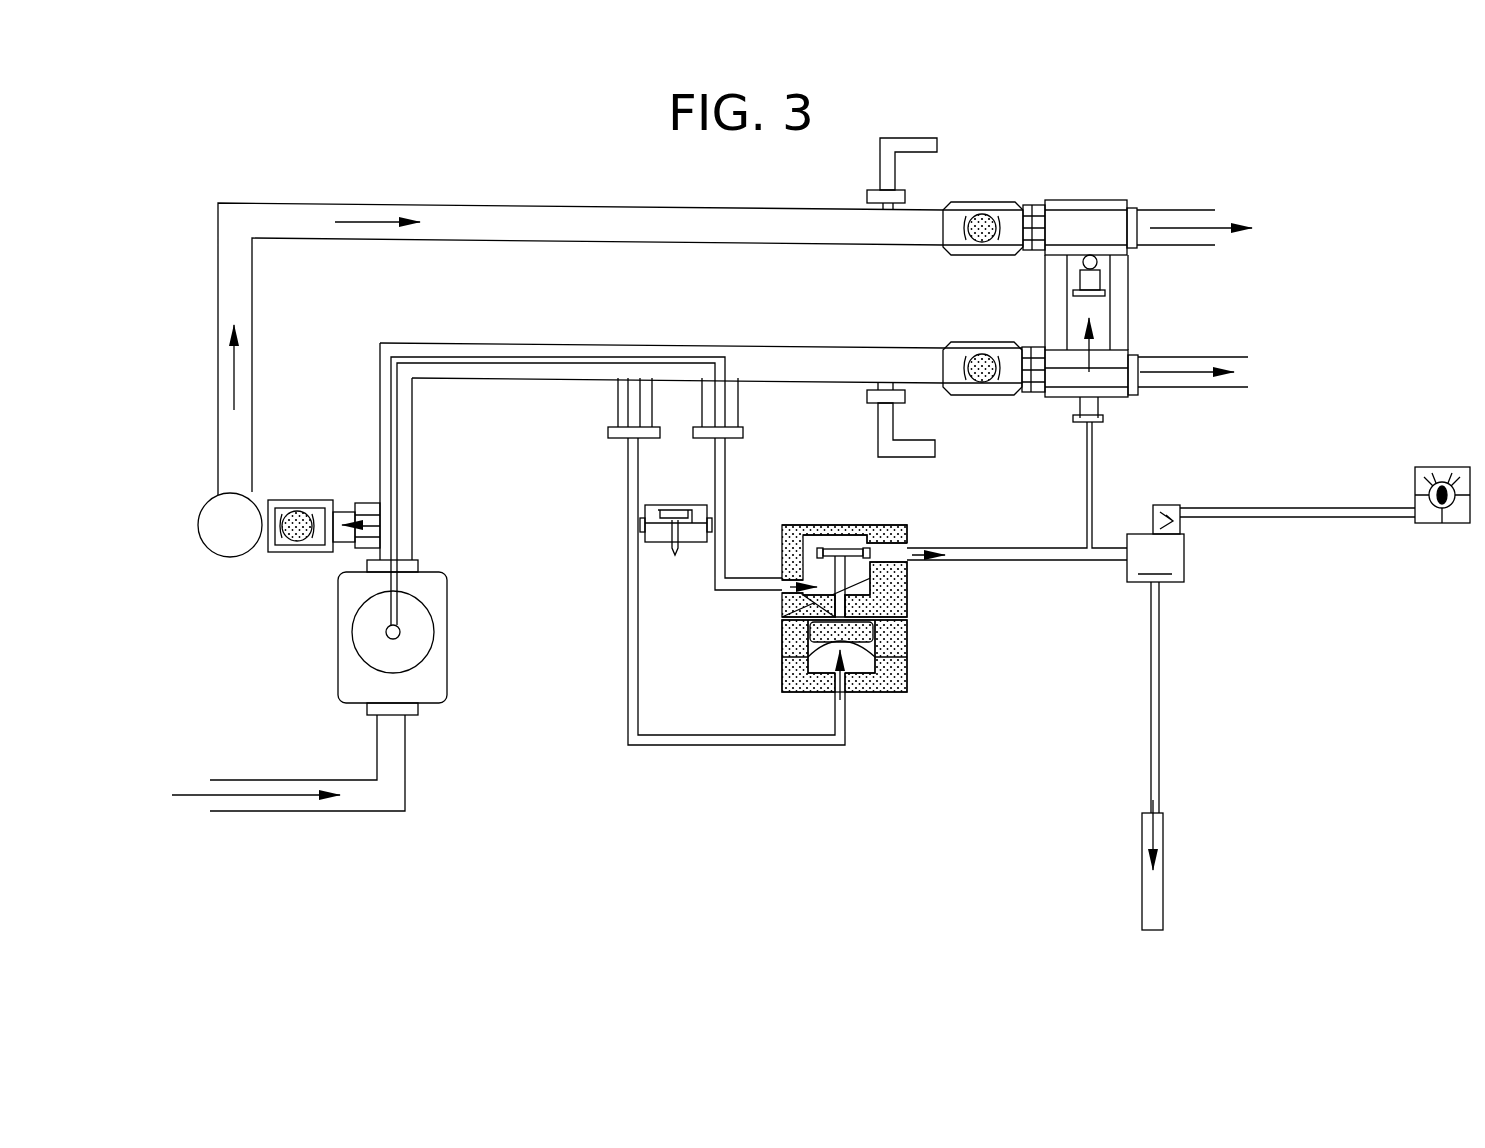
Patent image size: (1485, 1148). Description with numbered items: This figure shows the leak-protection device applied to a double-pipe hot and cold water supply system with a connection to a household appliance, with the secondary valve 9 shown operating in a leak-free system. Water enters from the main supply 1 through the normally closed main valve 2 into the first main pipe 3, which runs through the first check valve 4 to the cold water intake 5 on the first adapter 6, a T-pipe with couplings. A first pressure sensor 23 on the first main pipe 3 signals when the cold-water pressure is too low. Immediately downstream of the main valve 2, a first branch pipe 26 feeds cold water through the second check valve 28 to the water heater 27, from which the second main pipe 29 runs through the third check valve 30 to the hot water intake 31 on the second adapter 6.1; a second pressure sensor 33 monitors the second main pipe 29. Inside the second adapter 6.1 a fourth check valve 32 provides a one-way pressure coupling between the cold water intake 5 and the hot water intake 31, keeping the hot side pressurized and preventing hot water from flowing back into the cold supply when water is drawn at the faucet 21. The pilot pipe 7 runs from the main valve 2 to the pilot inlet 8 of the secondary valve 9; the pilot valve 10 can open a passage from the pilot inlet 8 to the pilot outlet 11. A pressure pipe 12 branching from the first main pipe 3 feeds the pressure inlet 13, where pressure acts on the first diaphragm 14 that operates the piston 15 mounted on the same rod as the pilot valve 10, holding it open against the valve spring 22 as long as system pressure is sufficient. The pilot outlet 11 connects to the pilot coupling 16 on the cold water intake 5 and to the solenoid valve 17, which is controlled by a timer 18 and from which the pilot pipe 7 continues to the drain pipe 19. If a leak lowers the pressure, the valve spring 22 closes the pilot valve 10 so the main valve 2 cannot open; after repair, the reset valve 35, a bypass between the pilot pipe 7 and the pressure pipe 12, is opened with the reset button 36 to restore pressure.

The main supply 1 is at (381, 815).
The main valve 2 is at (340, 636).
The first main pipe 3 is at (413, 515).
The first check valve 4 is at (975, 342).
The cold water intake 5 is at (1036, 398).
The first adapter 6 is at (1098, 200).
The second adapter 6.1 is at (1144, 298).
The pilot pipe 7 is at (530, 343).
The pilot inlet 8 is at (857, 594).
The secondary valve 9 is at (838, 532).
The pilot valve 10 is at (860, 560).
The pilot outlet 11 is at (915, 540).
The pressure pipe 12 is at (627, 710).
The pressure inlet 13 is at (848, 695).
The first diaphragm 14 is at (866, 660).
The piston 15 is at (860, 635).
The pilot coupling 16 is at (1103, 415).
The solenoid valve 17 is at (1185, 553).
The timer 18 is at (1410, 490).
The drain pipe 19 is at (1164, 828).
The faucet 21 is at (1238, 392).
The valve spring 22 is at (822, 548).
The first pressure sensor 23 is at (868, 397).
The first branch pipe 26 is at (366, 503).
The water heater 27 is at (214, 556).
The second check valve 28 is at (297, 500).
The second main pipe 29 is at (530, 205).
The third check valve 30 is at (985, 203).
The hot water intake 31 is at (1034, 205).
The fourth check valve 32 is at (1075, 272).
The second pressure sensor 33 is at (868, 195).
The reset valve 35 is at (677, 505).
The reset button 36 is at (675, 558).